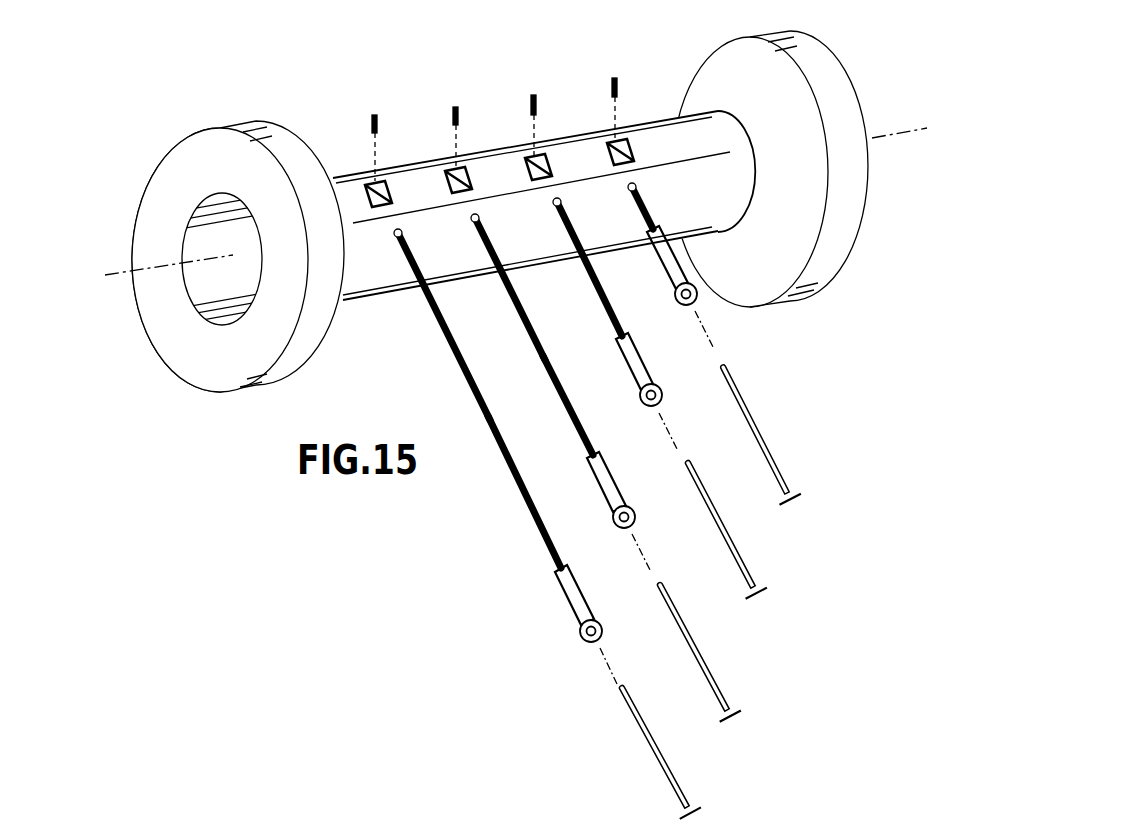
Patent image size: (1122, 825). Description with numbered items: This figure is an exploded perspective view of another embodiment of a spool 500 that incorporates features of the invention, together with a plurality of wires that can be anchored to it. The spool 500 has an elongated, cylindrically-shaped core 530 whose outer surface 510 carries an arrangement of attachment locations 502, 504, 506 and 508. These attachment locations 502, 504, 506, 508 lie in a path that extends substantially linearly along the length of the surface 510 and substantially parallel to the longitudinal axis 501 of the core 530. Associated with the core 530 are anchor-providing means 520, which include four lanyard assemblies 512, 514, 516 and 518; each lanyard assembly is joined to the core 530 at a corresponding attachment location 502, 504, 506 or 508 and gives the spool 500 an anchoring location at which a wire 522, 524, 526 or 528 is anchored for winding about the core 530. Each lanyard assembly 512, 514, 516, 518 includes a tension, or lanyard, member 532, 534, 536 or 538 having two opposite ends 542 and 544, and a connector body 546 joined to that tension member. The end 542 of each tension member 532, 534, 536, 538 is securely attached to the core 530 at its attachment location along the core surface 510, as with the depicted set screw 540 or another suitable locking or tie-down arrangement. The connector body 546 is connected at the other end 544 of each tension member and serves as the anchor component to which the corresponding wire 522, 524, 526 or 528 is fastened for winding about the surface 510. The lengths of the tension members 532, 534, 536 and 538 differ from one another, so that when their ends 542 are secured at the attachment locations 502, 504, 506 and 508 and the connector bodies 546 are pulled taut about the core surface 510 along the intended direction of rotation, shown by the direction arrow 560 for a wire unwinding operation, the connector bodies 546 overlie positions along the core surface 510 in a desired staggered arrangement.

The spool 500 is at (157, 105).
The longitudinal axis 501 is at (118, 290).
The attachment location 502 is at (385, 182).
The attachment location 504 is at (458, 168).
The attachment location 506 is at (545, 157).
The attachment location 508 is at (630, 142).
The surface of the core 510 is at (544, 204).
The lanyard assembly 512 is at (458, 400).
The lanyard assembly 514 is at (534, 336).
The lanyard assembly 516 is at (628, 301).
The lanyard assembly 518 is at (648, 213).
The anchor-providing means 520 is at (465, 528).
The wire 522 is at (660, 748).
The wire 524 is at (710, 658).
The wire 526 is at (747, 556).
The wire 528 is at (762, 430).
The core 530 is at (467, 268).
The tension member 532 is at (450, 354).
The tension member 534 is at (530, 346).
The tension member 536 is at (640, 330).
The tension member 538 is at (640, 202).
The set screw 540 is at (370, 125).
The tension member end 542 is at (399, 236).
The tension member end 544 is at (558, 570).
The connector body 546 is at (596, 616).
The direction arrow 560 is at (106, 280).